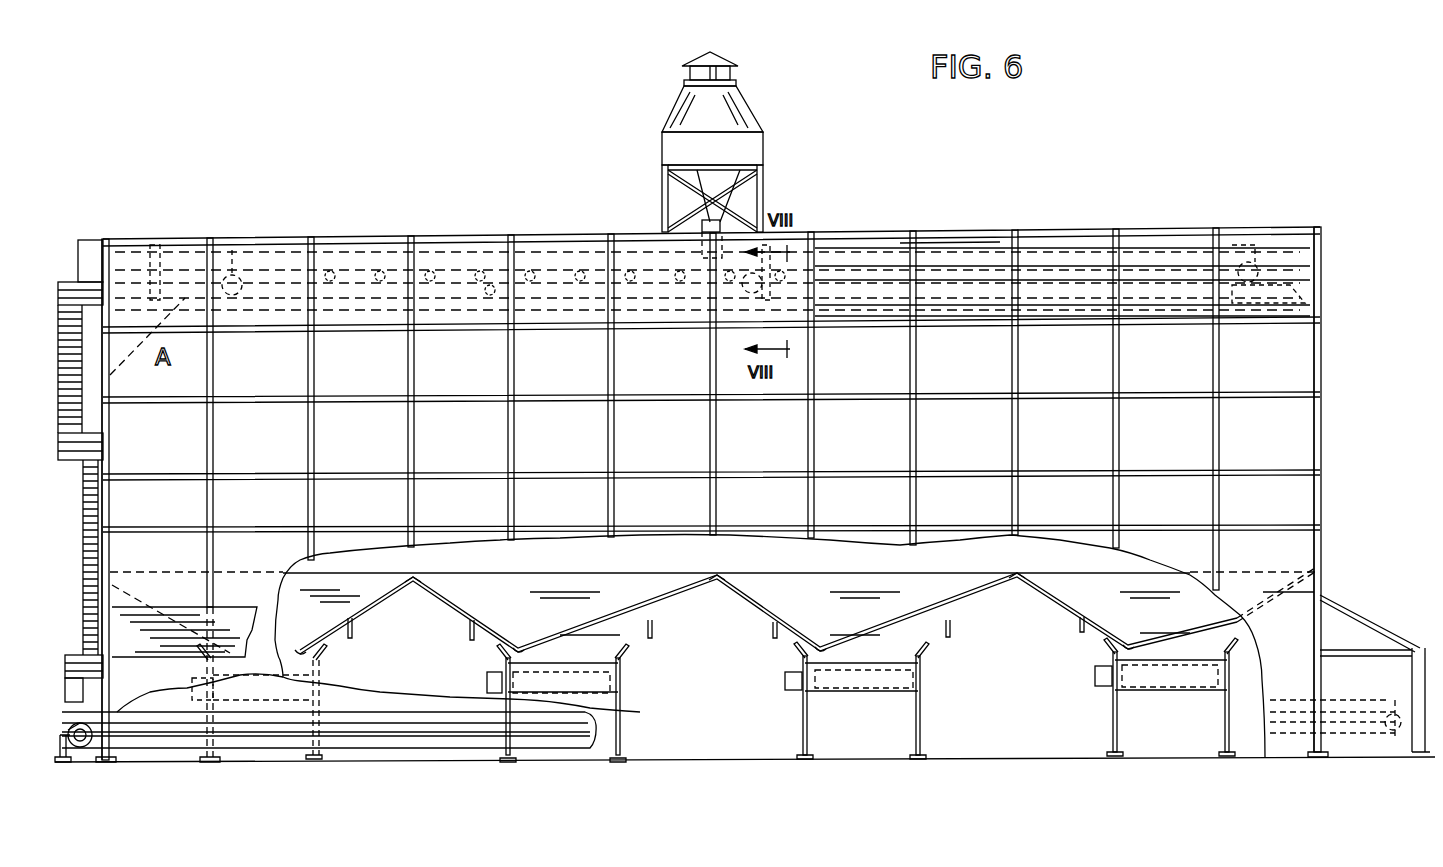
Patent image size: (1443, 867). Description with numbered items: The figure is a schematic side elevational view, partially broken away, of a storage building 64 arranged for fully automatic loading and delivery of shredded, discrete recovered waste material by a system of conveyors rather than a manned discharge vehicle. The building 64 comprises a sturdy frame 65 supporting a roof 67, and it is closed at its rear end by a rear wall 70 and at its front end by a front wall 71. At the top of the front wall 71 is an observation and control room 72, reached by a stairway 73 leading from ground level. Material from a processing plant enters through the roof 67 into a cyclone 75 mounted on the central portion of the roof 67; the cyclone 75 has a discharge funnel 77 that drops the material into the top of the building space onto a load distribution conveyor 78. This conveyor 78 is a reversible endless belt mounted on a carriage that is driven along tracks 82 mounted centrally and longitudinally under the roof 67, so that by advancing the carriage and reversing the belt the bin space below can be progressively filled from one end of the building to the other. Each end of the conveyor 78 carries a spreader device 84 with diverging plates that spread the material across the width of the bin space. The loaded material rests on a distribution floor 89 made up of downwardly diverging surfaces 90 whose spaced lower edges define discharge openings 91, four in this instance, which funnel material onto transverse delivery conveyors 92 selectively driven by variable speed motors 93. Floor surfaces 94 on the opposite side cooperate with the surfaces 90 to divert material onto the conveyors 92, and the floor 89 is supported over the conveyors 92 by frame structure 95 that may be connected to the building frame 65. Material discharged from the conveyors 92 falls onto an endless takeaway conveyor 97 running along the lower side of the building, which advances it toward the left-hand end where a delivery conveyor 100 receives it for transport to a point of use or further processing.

The storage building 64 is at (1030, 205).
The frame 65 is at (1313, 368).
The roof 67 is at (938, 232).
The rear wall 70 is at (1322, 401).
The front wall 71 is at (103, 410).
The observation and control room 72 is at (88, 262).
The stairway 73 is at (97, 468).
The cyclone 75 is at (662, 150).
The discharge funnel 77 is at (740, 196).
The load distribution conveyor 78 is at (558, 270).
The tracks 82 is at (1047, 318).
The spreader device 84 is at (225, 283).
The distribution floor 89 is at (655, 622).
The downwardly diverging surfaces 90 is at (150, 585).
The discharge openings 91 is at (303, 646).
The transverse delivery conveyors 92 is at (545, 672).
The variable speed motors 93 is at (192, 682).
The floor surfaces 94 is at (330, 600).
The frame structure 95 is at (470, 630).
The takeaway conveyor 97 is at (385, 720).
The delivery conveyor 100 is at (78, 749).